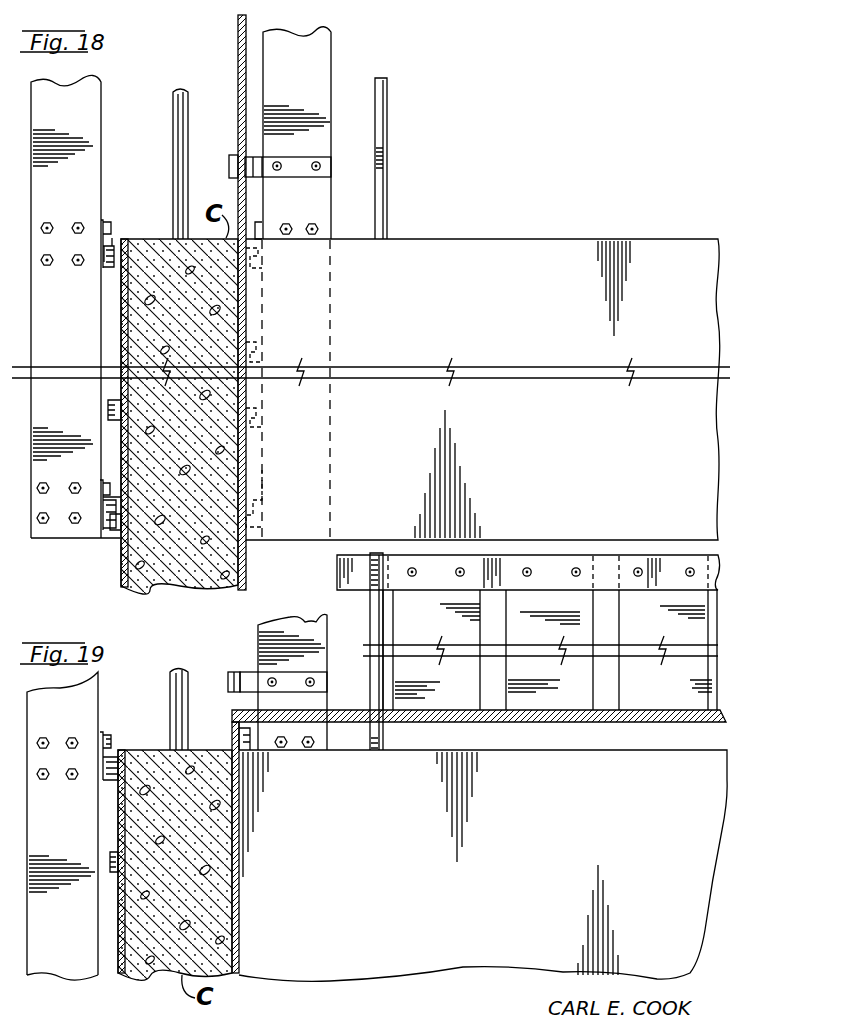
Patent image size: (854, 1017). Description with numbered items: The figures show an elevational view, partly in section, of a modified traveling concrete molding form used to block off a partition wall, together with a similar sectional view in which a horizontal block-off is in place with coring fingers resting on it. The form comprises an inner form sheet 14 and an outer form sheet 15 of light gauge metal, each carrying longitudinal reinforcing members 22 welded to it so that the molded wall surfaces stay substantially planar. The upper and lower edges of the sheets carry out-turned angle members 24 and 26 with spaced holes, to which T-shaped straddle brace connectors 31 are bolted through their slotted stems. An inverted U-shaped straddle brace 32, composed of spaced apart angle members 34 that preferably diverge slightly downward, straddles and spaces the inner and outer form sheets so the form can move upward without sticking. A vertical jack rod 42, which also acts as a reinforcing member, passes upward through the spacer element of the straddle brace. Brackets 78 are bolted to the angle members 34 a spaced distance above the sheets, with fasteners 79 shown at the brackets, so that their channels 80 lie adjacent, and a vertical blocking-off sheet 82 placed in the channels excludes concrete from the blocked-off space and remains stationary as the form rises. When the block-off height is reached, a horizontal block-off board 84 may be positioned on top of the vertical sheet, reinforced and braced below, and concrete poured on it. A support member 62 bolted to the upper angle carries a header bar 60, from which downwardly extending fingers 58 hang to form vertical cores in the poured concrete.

In FIG. 18, the inner form sheet 14 is at (490, 242).
In FIG. 19, the inner form sheet 14 is at (727, 788).
In FIG. 18, the outer form sheet 15 is at (126, 243).
In FIG. 19, the outer form sheet 15 is at (118, 965).
In FIG. 18, the reinforcing member 22 is at (115, 410).
In FIG. 19, the reinforcing member 22 is at (114, 856).
In FIG. 18, the out-turned angle member 24 is at (112, 265).
In FIG. 18, the out-turned angle member 26 is at (116, 525).
In FIG. 18, the straddle brace connector 31 is at (120, 238).
In FIG. 19, the straddle brace connector 31 is at (115, 750).
In FIG. 18, the straddle brace 32 is at (336, 42).
In FIG. 18, the angle member 34 is at (101, 100).
In FIG. 19, the angle member 34 is at (33, 955).
In FIG. 18, the jack rod 42 is at (175, 130).
In FIG. 19, the jack rod 42 is at (176, 698).
In FIG. 19, the finger 58 is at (718, 636).
In FIG. 19, the header bar 60 is at (718, 575).
In FIG. 18, the support member 62 is at (388, 205).
In FIG. 19, the support member 62 is at (374, 616).
In FIG. 18, the bracket 78 is at (330, 163).
In FIG. 19, the bracket 78 is at (258, 680).
In FIG. 18, the bolt 79 is at (320, 192).
In FIG. 19, the bolt 79 is at (316, 682).
In FIG. 19, the channel 80 is at (237, 676).
In FIG. 18, the blocking-off sheet 82 is at (238, 64).
In FIG. 19, the blocking-off sheet 82 is at (239, 922).
In FIG. 19, the horizontal block-off board 84 is at (722, 712).